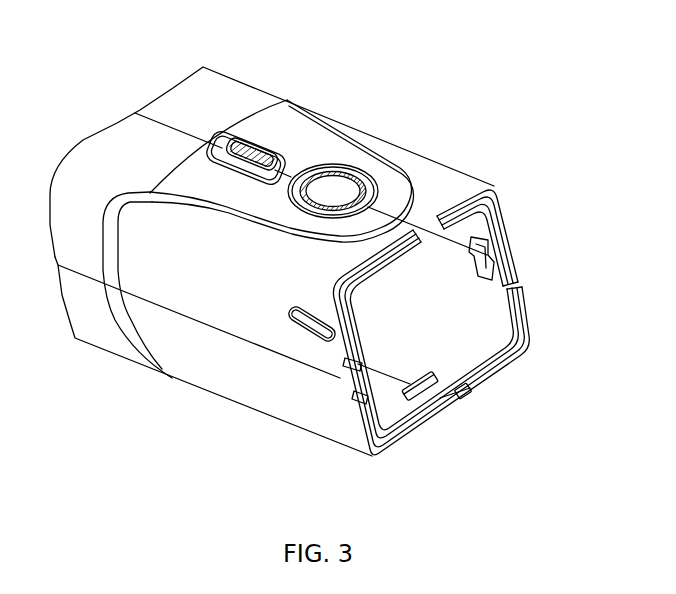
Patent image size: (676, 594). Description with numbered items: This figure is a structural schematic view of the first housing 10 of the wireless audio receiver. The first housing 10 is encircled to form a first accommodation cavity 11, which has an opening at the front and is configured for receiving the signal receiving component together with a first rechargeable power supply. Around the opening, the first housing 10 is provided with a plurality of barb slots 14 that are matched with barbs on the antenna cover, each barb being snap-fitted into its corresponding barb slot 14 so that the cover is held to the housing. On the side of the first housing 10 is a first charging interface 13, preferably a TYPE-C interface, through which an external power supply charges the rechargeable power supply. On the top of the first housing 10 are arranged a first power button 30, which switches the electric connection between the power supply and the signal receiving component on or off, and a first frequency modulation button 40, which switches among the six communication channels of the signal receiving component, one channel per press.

The first housing 10 is at (228, 83).
The first accommodation cavity 11 is at (470, 342).
The first charging interface 13 is at (312, 325).
The barb slots 14 is at (504, 207).
The first power button 30 is at (265, 138).
The first frequency modulation button 40 is at (335, 192).